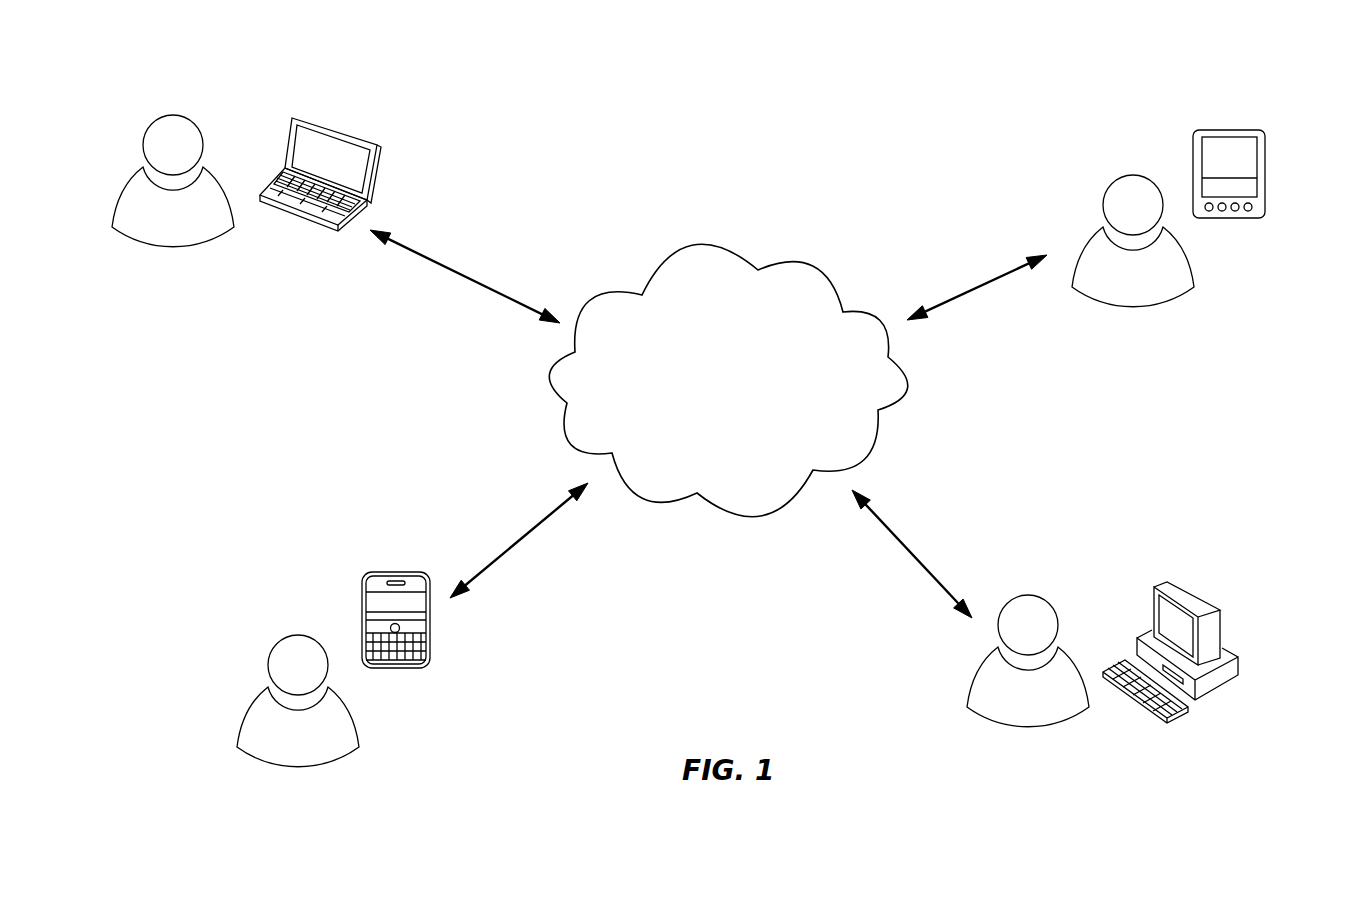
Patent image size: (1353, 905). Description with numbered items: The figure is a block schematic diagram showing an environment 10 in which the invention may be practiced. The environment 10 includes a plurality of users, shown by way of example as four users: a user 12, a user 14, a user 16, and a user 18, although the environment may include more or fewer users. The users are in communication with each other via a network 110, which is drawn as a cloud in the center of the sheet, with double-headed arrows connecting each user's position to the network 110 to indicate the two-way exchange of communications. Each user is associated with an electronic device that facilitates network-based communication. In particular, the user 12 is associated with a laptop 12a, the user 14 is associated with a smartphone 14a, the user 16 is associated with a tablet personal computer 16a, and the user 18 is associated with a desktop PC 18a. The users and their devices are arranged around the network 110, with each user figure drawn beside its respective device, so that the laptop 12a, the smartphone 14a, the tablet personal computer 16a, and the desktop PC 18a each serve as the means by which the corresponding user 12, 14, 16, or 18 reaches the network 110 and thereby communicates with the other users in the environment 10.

The environment 10 is at (1240, 103).
The user 12 is at (176, 114).
The laptop 12a is at (343, 130).
The user 14 is at (298, 633).
The smartphone 14a is at (396, 572).
The user 16 is at (1121, 175).
The tablet personal computer 16a is at (1212, 128).
The user 18 is at (1027, 594).
The desktop PC 18a is at (1207, 598).
The network 110 is at (706, 409).